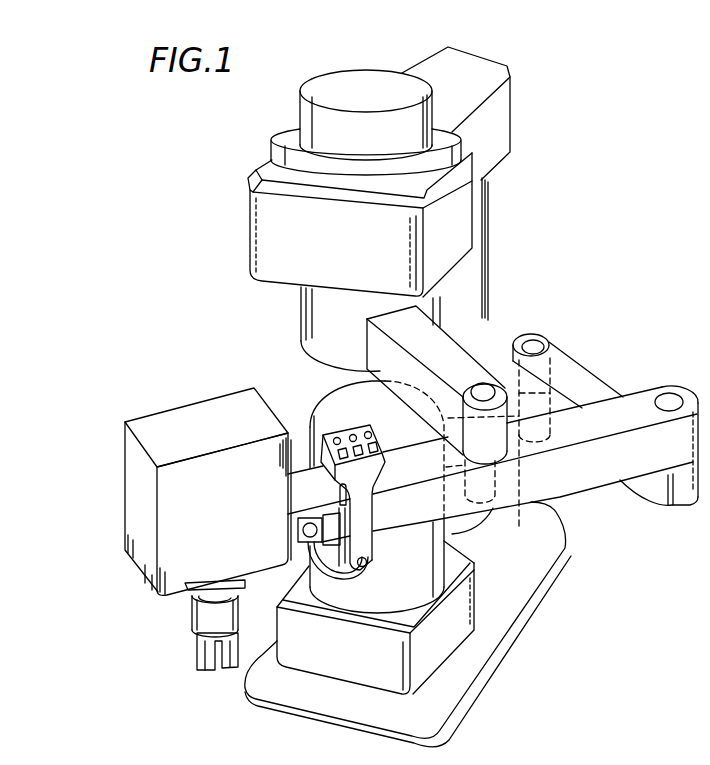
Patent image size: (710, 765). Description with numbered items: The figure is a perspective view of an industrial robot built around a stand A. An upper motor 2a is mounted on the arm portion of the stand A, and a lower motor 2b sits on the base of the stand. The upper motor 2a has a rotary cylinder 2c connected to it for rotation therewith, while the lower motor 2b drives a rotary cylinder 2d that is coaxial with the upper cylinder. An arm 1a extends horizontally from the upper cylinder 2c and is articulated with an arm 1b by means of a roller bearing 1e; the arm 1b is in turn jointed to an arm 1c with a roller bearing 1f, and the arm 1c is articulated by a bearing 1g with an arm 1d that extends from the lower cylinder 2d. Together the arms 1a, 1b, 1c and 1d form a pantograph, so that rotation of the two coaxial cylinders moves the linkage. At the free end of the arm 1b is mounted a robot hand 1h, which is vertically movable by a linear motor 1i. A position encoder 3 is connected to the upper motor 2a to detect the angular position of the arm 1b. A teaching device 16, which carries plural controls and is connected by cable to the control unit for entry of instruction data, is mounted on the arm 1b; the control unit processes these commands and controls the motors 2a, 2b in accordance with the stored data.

The position encoder 3 is at (357, 68).
The stand A is at (510, 121).
The upper motor 2a is at (249, 240).
The rotary cylinder 2c is at (301, 332).
The rotary cylinder 2d is at (322, 403).
The lower motor 2b is at (476, 600).
The arm 1a is at (452, 342).
The arm 1b is at (593, 483).
The arm 1c is at (601, 379).
The arm 1d is at (520, 520).
The roller bearing 1e is at (493, 383).
The roller bearing 1f is at (670, 396).
The bearing 1g is at (538, 346).
The robot hand 1h is at (196, 648).
The linear motor 1i is at (173, 410).
The teaching device 16 is at (372, 526).